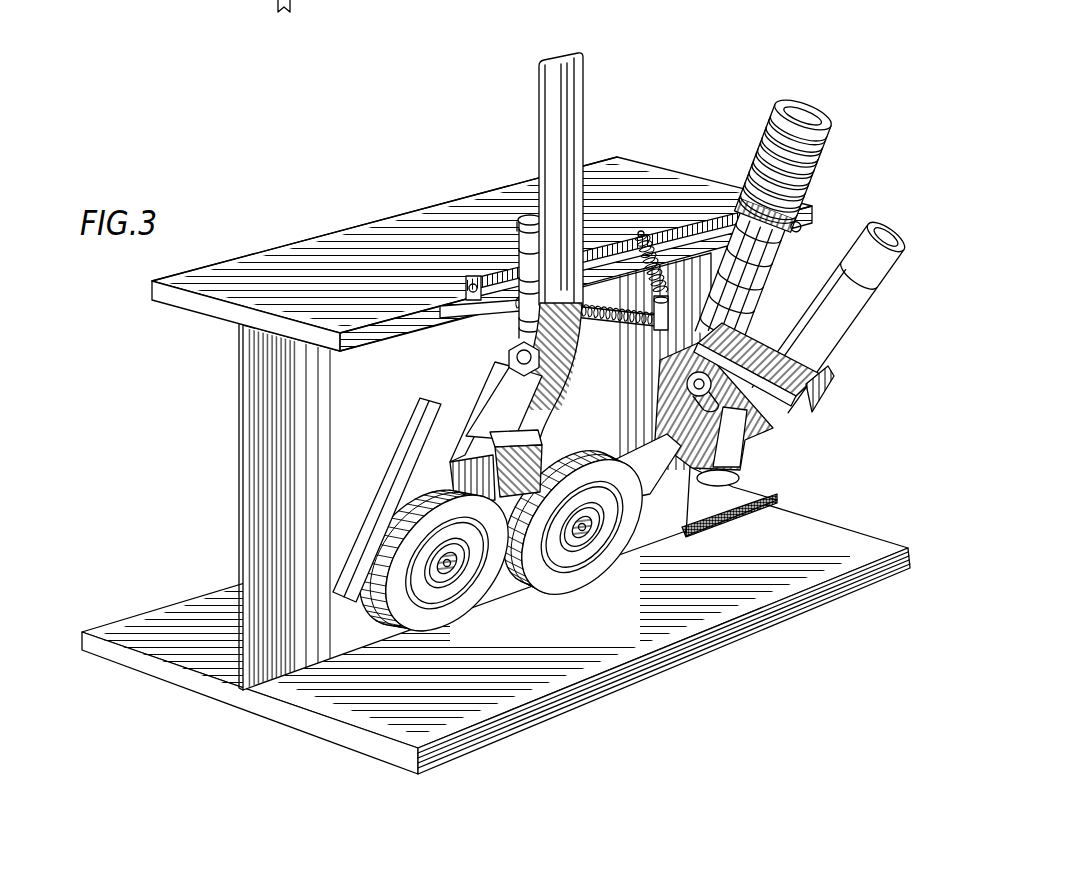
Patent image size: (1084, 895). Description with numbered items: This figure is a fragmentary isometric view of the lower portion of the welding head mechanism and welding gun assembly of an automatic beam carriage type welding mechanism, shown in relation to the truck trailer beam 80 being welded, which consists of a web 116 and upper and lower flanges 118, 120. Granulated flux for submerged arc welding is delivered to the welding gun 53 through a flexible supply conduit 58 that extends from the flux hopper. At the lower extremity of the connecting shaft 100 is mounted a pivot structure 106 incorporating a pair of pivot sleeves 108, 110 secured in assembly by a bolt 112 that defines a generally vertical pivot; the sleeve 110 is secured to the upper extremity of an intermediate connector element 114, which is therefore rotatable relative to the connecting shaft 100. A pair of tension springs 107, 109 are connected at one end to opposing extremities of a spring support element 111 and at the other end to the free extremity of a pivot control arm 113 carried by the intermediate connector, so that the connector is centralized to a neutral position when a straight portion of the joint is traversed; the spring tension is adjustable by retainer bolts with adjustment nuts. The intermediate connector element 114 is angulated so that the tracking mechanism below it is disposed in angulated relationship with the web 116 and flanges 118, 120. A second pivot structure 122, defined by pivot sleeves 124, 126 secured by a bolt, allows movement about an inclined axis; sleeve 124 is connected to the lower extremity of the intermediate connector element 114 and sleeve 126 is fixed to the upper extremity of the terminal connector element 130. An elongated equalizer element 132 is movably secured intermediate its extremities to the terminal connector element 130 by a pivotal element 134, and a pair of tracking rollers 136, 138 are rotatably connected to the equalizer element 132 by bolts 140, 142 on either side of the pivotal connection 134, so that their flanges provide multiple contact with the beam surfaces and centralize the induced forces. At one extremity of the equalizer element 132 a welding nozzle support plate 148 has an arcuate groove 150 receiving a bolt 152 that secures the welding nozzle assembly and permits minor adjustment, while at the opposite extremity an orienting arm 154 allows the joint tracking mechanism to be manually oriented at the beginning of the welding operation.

The welding gun 53 is at (735, 463).
The flexible supply conduit 58 is at (823, 150).
The truck trailer beam 80 is at (344, 211).
The connecting shaft 100 is at (574, 93).
The pivot structure 106 is at (517, 247).
The tension spring 107 is at (646, 303).
The pivot sleeve 108 is at (527, 253).
The tension spring 109 is at (500, 302).
The pivot sleeve 110 is at (487, 270).
The spring support element 111 is at (600, 243).
The bolt 112 is at (503, 235).
The pivot control arm 113 is at (667, 326).
The intermediate connector element 114 is at (557, 370).
The web 116 is at (273, 497).
The upper flange 118 is at (272, 270).
The lower flange 120 is at (395, 705).
The second pivot structure 122 is at (490, 354).
The pivot sleeve 124 is at (493, 393).
The pivot sleeve 126 is at (483, 417).
The terminal connector element 130 is at (487, 443).
The equalizer element 132 is at (655, 533).
The pivotal element 134 is at (546, 482).
The tracking roller 136 is at (447, 587).
The tracking roller 138 is at (582, 578).
The bolt 140 is at (468, 612).
The bolt 142 is at (593, 531).
The welding nozzle support plate 148 is at (727, 422).
The arcuate groove 150 is at (718, 396).
The bolt 152 is at (708, 402).
The orienting arm 154 is at (360, 533).